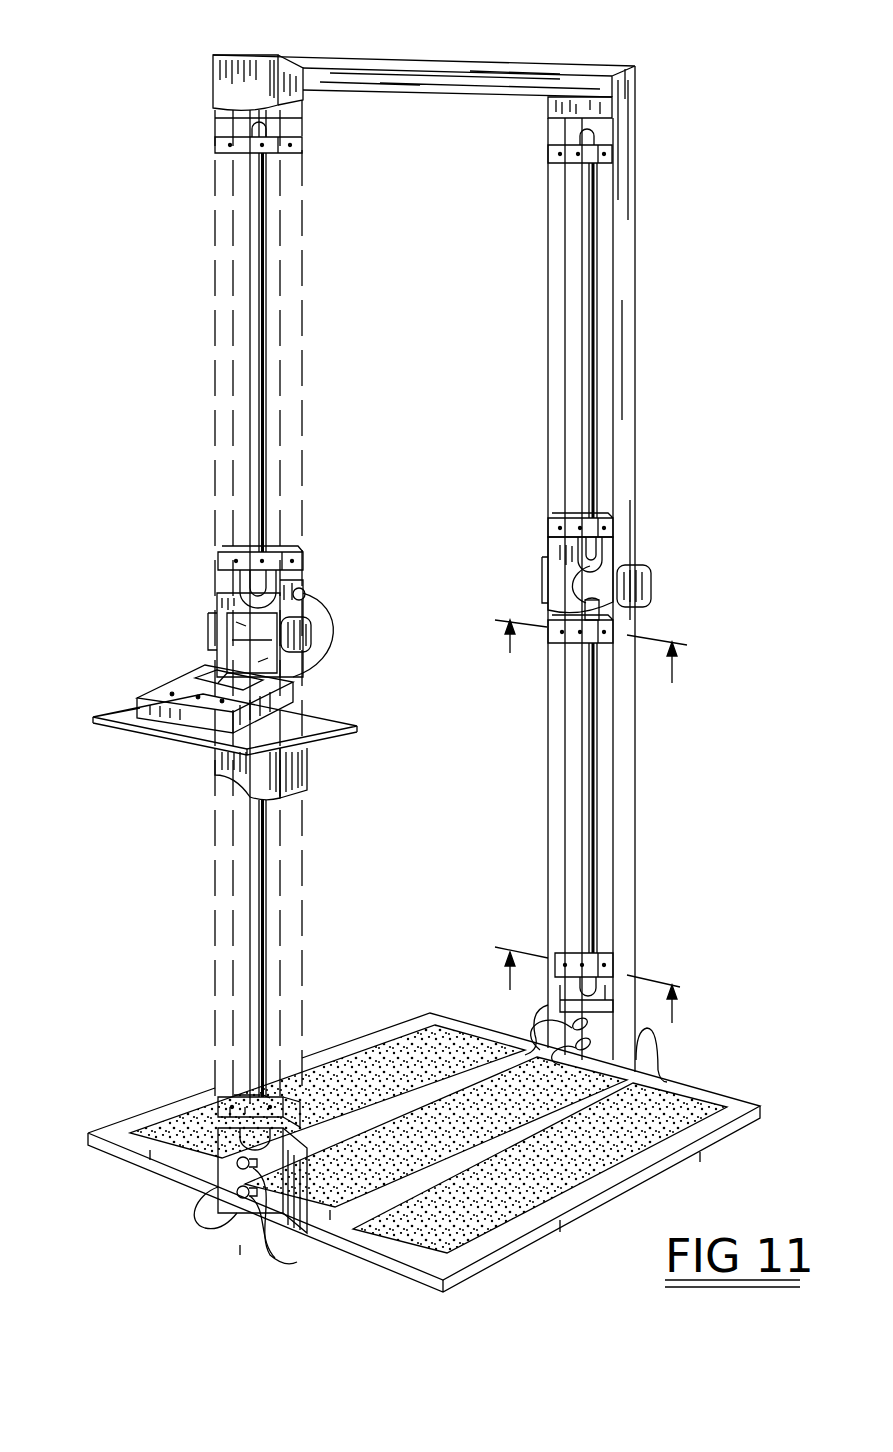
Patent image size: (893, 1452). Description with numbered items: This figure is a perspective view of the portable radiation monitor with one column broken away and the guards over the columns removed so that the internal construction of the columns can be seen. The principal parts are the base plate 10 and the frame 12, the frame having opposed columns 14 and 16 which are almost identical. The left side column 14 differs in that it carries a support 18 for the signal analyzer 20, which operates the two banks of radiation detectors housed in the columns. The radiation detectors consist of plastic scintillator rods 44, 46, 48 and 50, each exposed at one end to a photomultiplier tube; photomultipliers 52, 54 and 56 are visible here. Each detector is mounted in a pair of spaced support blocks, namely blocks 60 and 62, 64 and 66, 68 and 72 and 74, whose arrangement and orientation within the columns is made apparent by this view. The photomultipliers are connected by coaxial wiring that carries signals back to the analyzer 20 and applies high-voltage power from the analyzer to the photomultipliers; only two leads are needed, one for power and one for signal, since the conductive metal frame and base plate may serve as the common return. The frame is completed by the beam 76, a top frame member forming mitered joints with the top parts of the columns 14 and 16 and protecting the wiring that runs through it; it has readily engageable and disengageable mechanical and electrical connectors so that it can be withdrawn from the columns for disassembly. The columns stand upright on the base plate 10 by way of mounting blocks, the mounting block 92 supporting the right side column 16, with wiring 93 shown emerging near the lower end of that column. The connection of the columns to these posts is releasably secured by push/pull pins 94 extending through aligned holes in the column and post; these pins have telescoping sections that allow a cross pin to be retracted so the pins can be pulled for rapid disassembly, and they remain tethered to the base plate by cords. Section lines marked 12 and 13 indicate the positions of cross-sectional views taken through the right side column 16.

The base plate 10 is at (700, 1153).
The frame 12 is at (591, 634).
The section line 13- 13 is at (591, 964).
The column 14 is at (222, 765).
The column 16 is at (636, 832).
The support 18 is at (147, 746).
The signal analyzer 20 is at (183, 678).
The plastic scintillator detector rod 44 is at (592, 788).
The plastic scintillator detector rod 46 is at (592, 378).
The plastic scintillator detector rod 48 is at (265, 878).
The plastic scintillator detector rod 50 is at (262, 378).
The photomultiplier tube 52 is at (598, 550).
The photomultiplier tube 54 is at (577, 620).
The photomultiplier tube 56 is at (257, 585).
The support block 60 is at (560, 526).
The support block 62 is at (615, 158).
The support block 64 is at (590, 957).
The support block 66 is at (580, 637).
The support block 68 is at (223, 1090).
The support block 72 is at (300, 552).
The support block 74 is at (216, 142).
The beam 76 is at (430, 57).
The mounting block 92 is at (598, 1052).
The cables 93 is at (580, 1045).
The push/pull pins 94 is at (262, 1205).